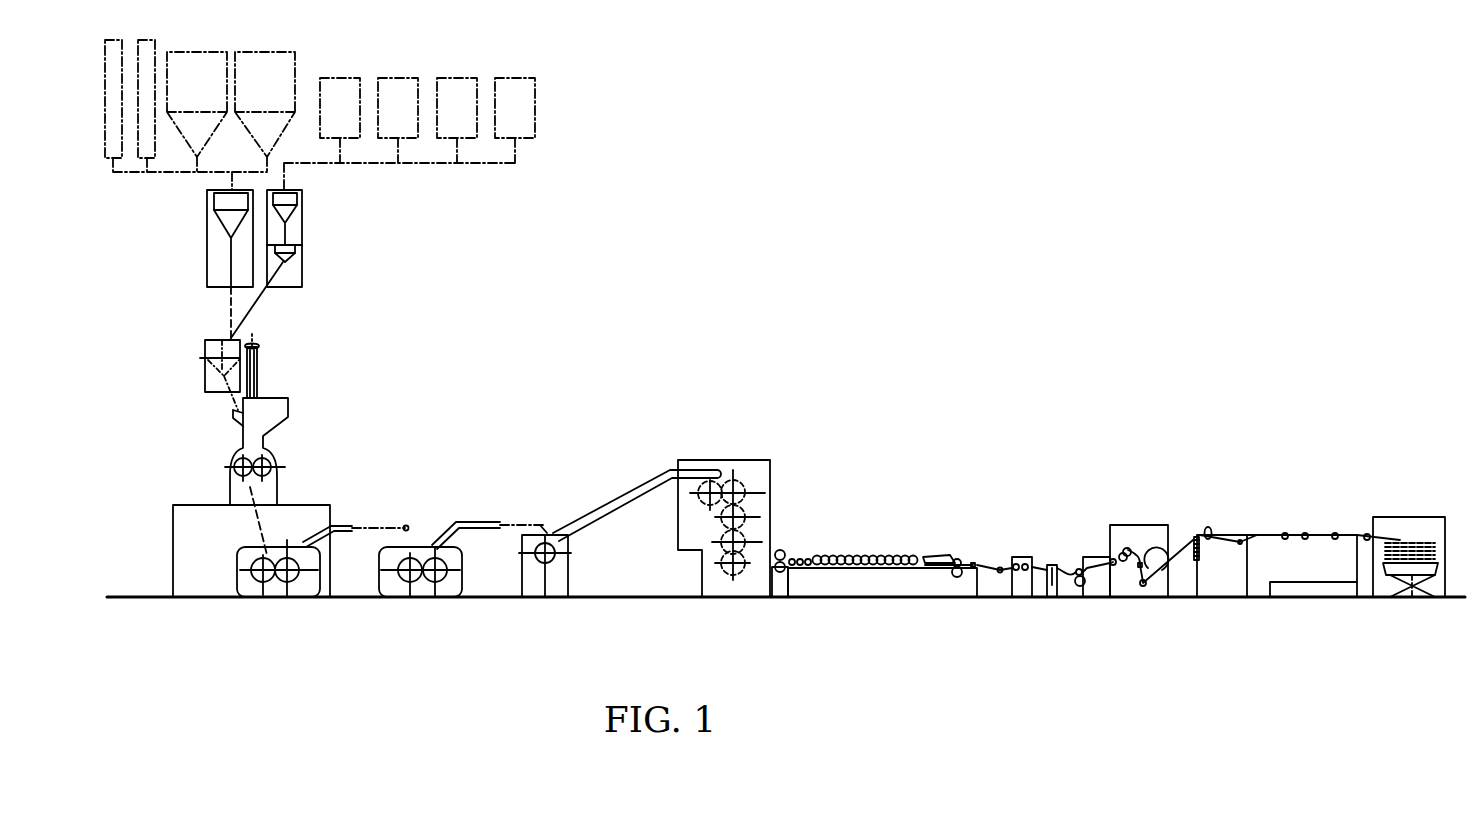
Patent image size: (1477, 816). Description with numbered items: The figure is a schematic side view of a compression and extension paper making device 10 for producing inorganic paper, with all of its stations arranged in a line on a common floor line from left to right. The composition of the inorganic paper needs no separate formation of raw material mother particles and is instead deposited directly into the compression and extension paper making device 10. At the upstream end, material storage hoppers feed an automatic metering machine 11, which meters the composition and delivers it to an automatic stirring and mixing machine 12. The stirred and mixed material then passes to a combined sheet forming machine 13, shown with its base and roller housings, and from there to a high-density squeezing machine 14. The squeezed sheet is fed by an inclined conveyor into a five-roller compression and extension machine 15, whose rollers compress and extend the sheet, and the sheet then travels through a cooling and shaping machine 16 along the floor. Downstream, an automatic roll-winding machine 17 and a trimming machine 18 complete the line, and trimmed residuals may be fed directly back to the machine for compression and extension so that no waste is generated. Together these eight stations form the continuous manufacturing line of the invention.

The compression and extension paper making device 10 is at (866, 256).
The automatic metering machine 11 is at (310, 238).
The automatic stirring and mixing machine 12 is at (290, 425).
The combined sheet forming machine 13 is at (260, 607).
The high-density squeezing machine 14 is at (570, 570).
The five-roller compression and extension machine 15 is at (753, 460).
The cooling and shaping machine 16 is at (917, 582).
The automatic roll-winding machine 17 is at (1173, 522).
The trimming machine 18 is at (1305, 525).